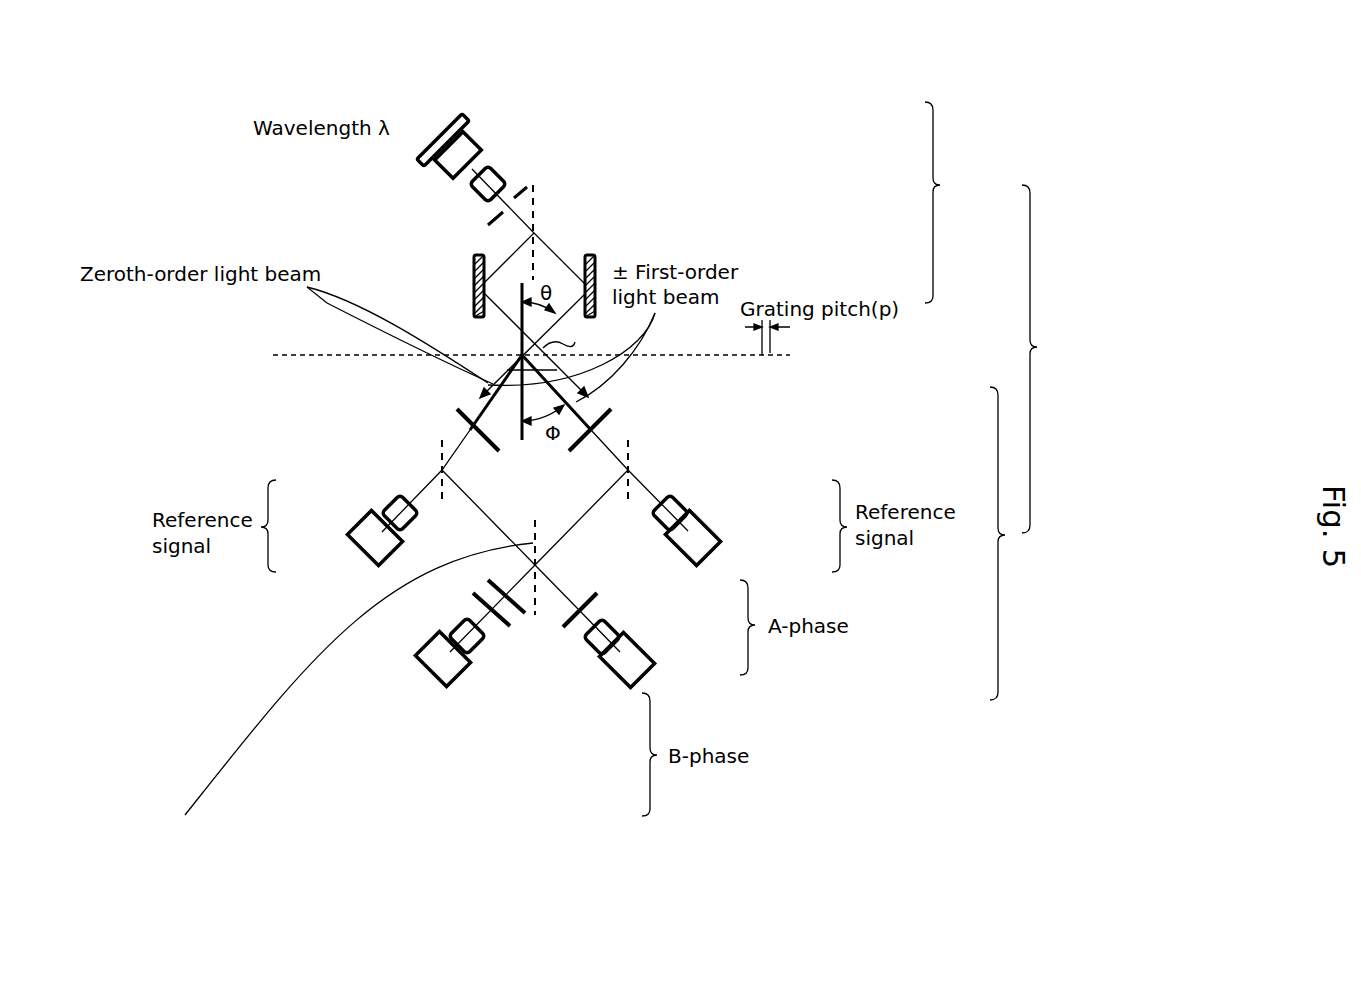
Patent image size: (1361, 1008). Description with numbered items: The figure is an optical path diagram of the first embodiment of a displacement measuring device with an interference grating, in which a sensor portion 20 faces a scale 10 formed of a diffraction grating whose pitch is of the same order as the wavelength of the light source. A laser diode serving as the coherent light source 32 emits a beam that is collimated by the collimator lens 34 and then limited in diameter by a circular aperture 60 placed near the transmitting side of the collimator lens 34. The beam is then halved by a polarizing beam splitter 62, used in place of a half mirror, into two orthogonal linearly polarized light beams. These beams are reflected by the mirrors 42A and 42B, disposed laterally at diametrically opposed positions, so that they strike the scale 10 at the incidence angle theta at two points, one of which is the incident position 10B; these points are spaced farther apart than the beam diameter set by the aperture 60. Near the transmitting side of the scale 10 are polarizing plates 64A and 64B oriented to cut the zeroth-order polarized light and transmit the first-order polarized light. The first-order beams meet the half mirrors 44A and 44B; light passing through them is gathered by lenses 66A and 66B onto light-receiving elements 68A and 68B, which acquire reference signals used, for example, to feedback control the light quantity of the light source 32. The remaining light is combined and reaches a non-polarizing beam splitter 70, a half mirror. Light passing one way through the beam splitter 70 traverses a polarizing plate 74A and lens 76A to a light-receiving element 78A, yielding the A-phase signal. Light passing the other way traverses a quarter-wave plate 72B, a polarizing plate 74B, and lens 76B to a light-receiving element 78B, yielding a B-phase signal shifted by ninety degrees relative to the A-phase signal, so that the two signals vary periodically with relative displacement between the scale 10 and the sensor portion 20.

The coherent light source 32 is at (433, 147).
The collimator lens 34 is at (500, 170).
The circular aperture 60 is at (521, 190).
The polarizing beam splitter 62 is at (537, 218).
The mirror 42A is at (473, 277).
The mirror 42B is at (597, 275).
The incident position 10B is at (515, 352).
The scale 10 is at (780, 355).
The polarizing plate 64A is at (612, 408).
The polarizing plate 64B is at (457, 408).
The half mirror 44A is at (630, 455).
The half mirror 44B is at (440, 455).
The lens 66A is at (683, 507).
The lens 66B is at (388, 503).
The light-receiving element 68A is at (717, 542).
The light-receiving element 68B is at (372, 550).
The quarter-wave plate 72B is at (525, 615).
The polarizing plate 74A is at (597, 595).
The polarizing plate 74B is at (509, 630).
The lens 76A is at (617, 630).
The lens 76B is at (483, 653).
The light-receiving element 78A is at (643, 673).
The light-receiving element 78B is at (463, 677).
The non-polarizing beam splitter 70 is at (348, 700).
The sensor portion 20 is at (1052, 359).